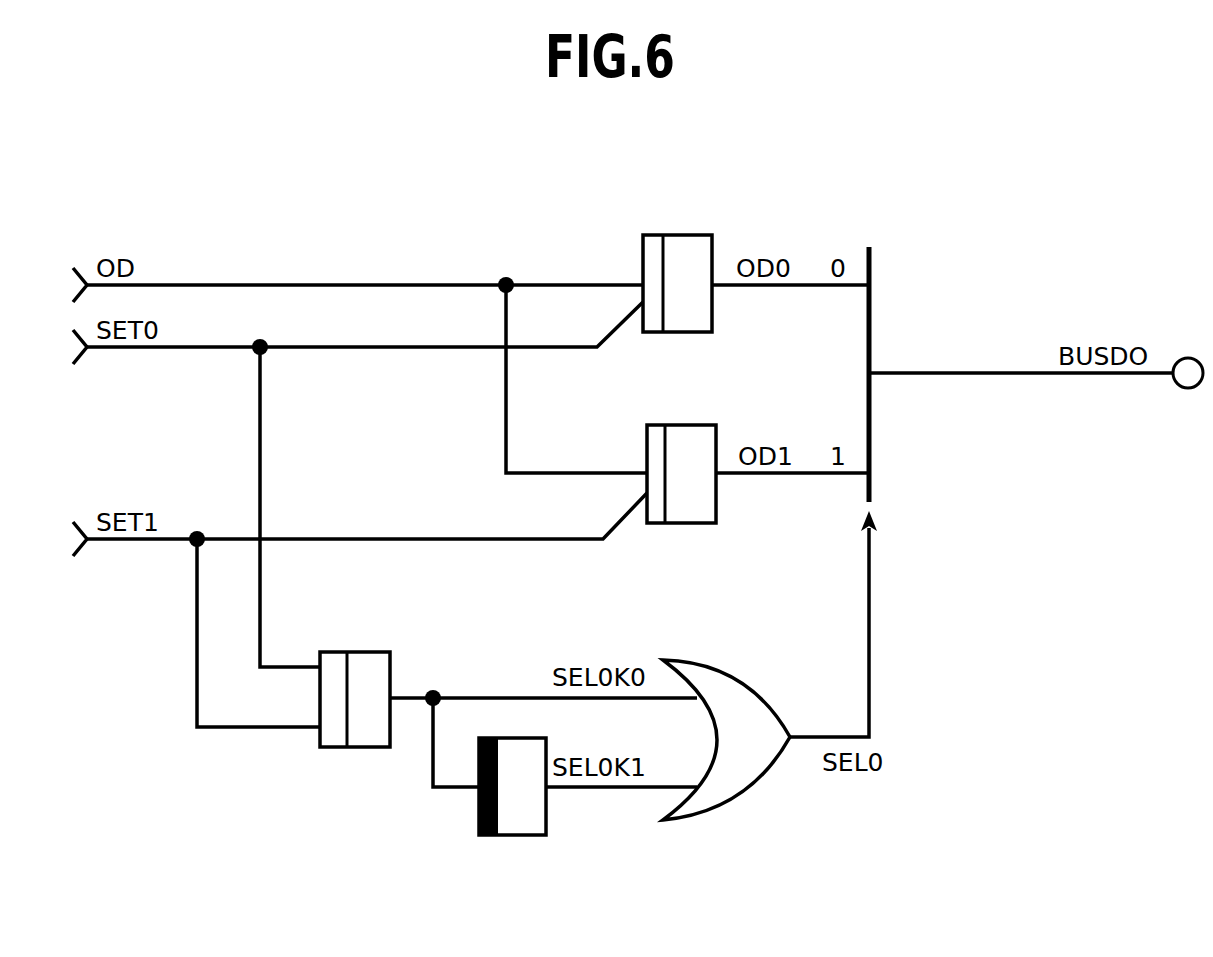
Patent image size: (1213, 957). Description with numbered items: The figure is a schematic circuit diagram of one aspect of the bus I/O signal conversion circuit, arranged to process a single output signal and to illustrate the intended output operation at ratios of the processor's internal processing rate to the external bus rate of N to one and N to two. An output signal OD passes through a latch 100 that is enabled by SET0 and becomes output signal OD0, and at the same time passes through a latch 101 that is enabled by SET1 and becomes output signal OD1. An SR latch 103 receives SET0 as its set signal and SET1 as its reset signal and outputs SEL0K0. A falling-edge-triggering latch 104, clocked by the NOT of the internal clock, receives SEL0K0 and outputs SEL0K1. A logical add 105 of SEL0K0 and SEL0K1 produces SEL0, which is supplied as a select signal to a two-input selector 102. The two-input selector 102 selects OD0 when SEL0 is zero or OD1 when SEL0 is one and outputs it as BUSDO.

The latch 100 is at (680, 235).
The latch 101 is at (682, 425).
The 2-input selector 102 is at (869, 247).
The SR latch 103 is at (355, 652).
The falling-edge-triggering latch 104 is at (520, 835).
The logical add 105 is at (748, 690).